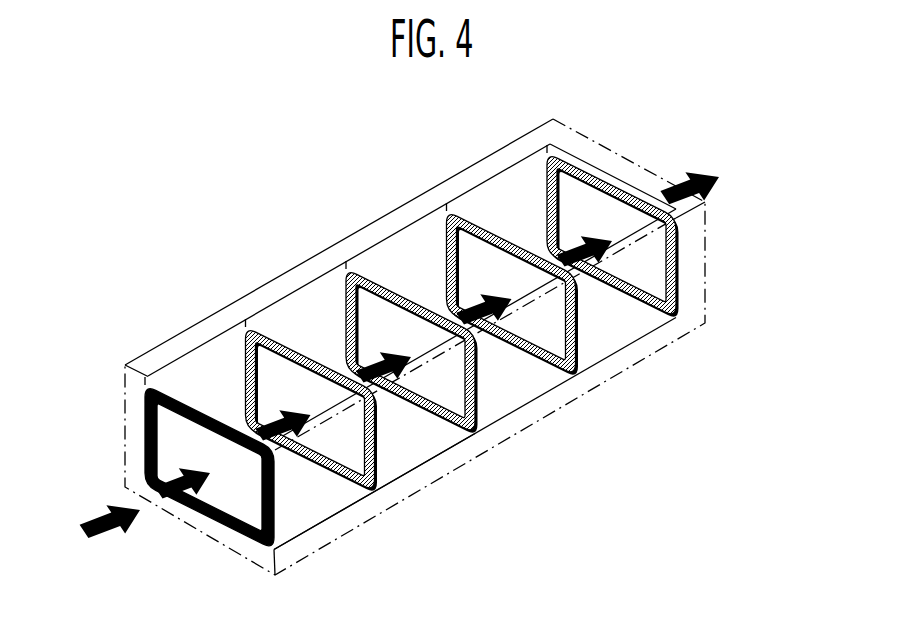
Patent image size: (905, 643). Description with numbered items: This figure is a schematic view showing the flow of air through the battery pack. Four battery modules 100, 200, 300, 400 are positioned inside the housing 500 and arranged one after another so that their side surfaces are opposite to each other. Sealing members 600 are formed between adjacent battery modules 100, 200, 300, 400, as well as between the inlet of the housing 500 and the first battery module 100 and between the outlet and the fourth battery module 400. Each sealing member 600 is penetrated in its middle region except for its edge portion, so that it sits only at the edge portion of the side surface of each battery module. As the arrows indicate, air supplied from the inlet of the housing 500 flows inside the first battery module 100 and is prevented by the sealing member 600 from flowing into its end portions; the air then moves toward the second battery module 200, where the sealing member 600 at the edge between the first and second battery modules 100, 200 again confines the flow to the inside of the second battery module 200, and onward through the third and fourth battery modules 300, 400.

The first battery module 100 is at (313, 508).
The second battery module 200 is at (413, 453).
The third battery module 300 is at (517, 392).
The fourth battery module 400 is at (615, 335).
The housing 500 is at (452, 178).
The sealing member 600 is at (377, 478).